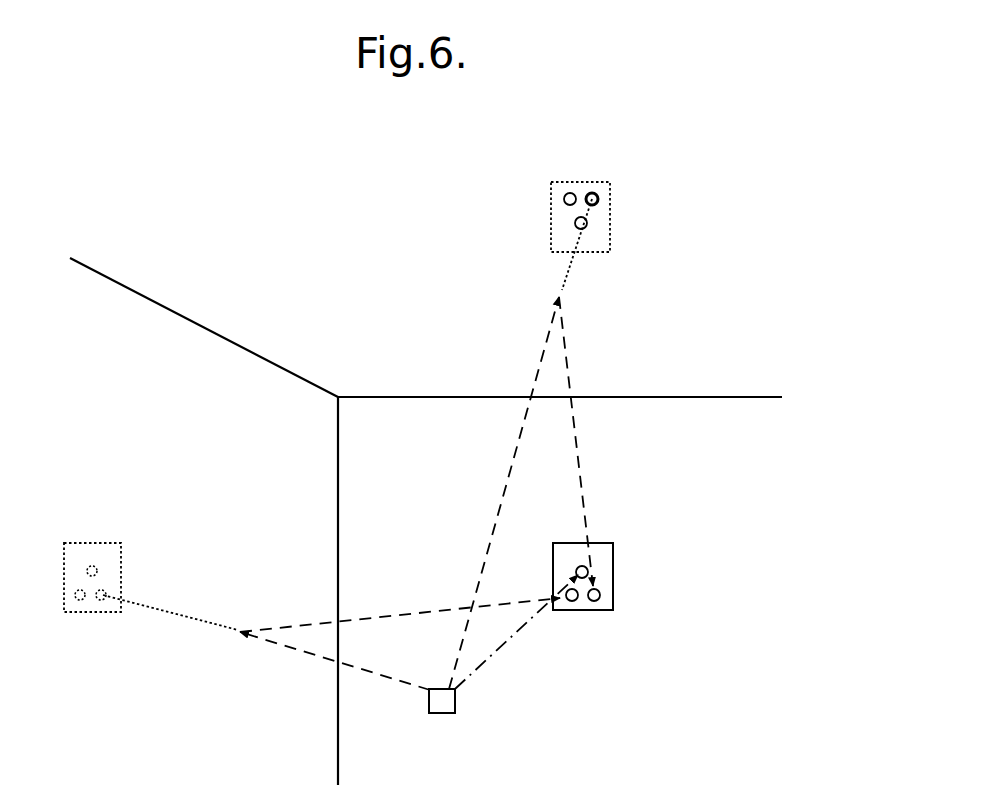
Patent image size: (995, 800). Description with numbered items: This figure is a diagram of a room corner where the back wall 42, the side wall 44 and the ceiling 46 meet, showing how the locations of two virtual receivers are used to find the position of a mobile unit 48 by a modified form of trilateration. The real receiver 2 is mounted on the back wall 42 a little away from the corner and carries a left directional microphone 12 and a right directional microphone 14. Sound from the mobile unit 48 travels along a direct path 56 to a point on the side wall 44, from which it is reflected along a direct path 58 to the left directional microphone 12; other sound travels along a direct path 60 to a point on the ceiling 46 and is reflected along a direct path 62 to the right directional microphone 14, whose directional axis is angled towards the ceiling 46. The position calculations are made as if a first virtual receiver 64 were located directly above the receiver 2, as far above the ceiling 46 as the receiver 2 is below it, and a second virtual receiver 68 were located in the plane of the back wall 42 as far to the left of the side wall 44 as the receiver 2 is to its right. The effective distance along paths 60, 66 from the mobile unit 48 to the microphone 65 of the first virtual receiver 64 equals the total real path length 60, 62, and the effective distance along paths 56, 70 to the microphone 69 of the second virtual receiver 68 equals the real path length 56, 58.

The receiver 2 is at (625, 603).
The left directional microphone 12 is at (572, 603).
The right directional microphone 14 is at (602, 596).
The back wall 42 is at (384, 431).
The side wall 44 is at (323, 429).
The ceiling 46 is at (370, 384).
The mobile unit 48 is at (440, 714).
The direct path 56 is at (385, 678).
The direct path 58 is at (407, 612).
The direct path 60 is at (505, 477).
The direct path 62 is at (583, 477).
The first virtual receiver 64 is at (618, 186).
The microphone of the first virtual receiver 65 is at (588, 193).
The effective distance 66 is at (570, 272).
The second virtual receiver 68 is at (92, 571).
The microphone of the second virtual receiver 69 is at (100, 601).
The effective distance 70 is at (190, 617).